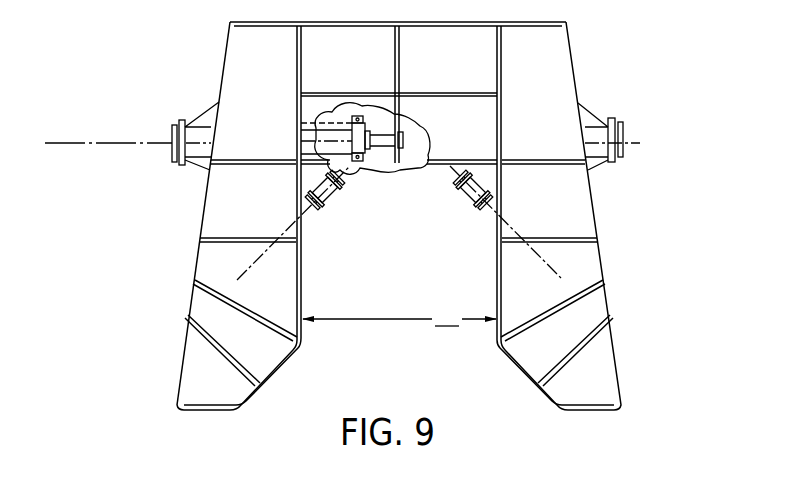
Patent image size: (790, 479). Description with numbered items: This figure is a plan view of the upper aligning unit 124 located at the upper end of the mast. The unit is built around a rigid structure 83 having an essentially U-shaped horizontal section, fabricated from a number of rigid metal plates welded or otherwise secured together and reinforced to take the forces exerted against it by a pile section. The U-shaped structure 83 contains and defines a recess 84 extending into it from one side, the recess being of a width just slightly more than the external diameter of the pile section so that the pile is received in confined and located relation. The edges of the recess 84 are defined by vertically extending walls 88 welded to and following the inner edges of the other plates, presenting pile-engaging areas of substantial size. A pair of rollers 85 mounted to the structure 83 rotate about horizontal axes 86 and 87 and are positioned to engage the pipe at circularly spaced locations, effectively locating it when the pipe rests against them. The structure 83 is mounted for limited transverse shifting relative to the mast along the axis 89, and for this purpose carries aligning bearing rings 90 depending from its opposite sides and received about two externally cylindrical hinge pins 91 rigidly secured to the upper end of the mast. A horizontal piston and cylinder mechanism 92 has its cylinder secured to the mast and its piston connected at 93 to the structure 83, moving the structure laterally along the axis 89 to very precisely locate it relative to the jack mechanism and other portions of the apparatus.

The rigid structure 83 is at (300, 333).
The recess 84 is at (410, 294).
The rollers 85 is at (462, 189).
The horizontal axis 86 is at (243, 272).
The horizontal axis 87 is at (533, 247).
The vertically extending walls 88 is at (305, 266).
The axis 89 is at (95, 143).
The aligning bearing rings 90 is at (193, 131).
The hinge pins 91 is at (627, 145).
The piston and cylinder mechanism 92 is at (337, 133).
The piston connection 93 is at (398, 137).
The aligning unit 124 is at (447, 216).